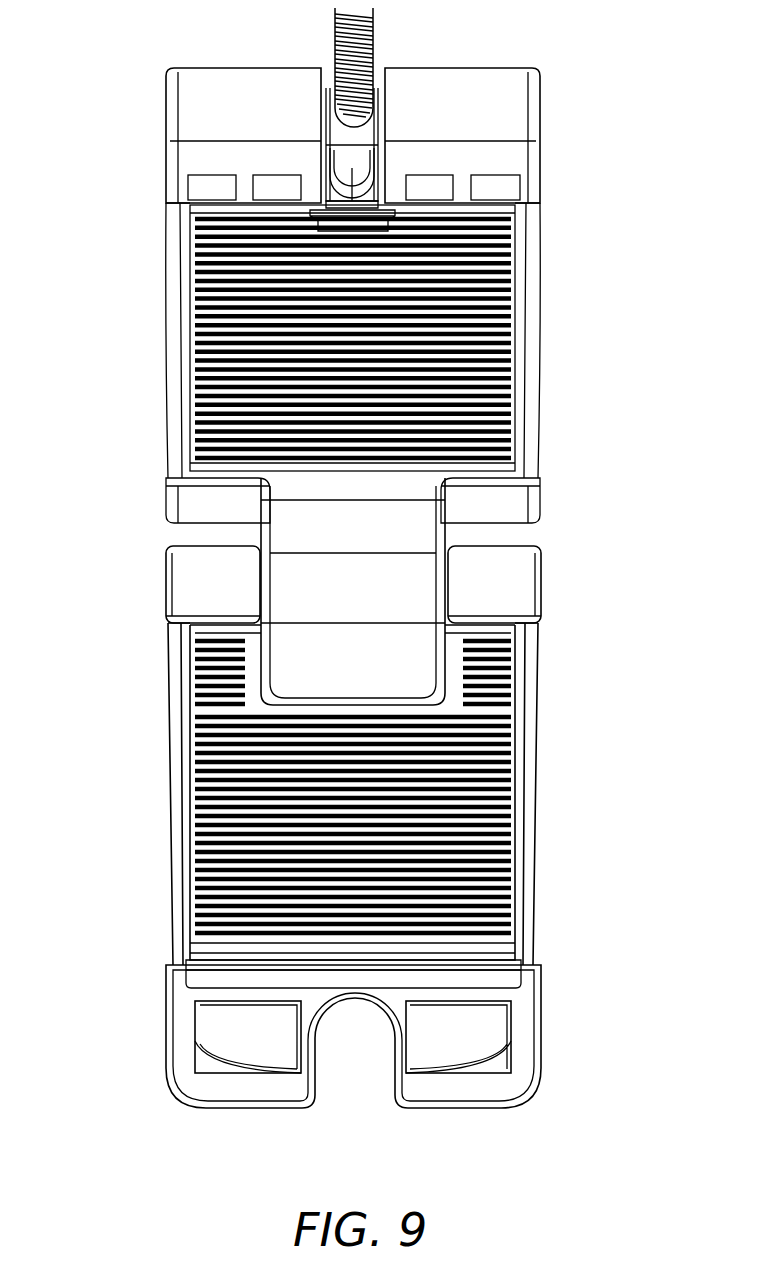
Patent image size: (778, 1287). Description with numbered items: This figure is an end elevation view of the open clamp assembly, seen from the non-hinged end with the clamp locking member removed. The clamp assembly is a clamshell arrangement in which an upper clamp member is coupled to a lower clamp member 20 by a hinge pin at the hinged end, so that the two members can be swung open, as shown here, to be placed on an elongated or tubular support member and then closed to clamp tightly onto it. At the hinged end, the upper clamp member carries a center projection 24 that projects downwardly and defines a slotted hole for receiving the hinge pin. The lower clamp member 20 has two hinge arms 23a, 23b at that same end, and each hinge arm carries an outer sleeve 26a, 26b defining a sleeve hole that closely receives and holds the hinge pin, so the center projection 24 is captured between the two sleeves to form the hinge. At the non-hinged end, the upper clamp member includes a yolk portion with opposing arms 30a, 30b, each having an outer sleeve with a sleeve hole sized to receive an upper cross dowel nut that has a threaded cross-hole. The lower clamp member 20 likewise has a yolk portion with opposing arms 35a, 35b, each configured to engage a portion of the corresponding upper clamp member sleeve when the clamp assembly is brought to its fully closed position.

The lower clamp member 20 is at (163, 788).
The hinge arm 23a is at (177, 648).
The hinge arm 23b is at (510, 648).
The center projection 24 is at (437, 524).
The outer sleeve 26a is at (177, 573).
The outer sleeve 26b is at (513, 573).
The opposing arm 30a is at (177, 150).
The opposing arm 30b is at (512, 150).
The opposing arm 35a is at (200, 1015).
The opposing arm 35b is at (490, 1015).